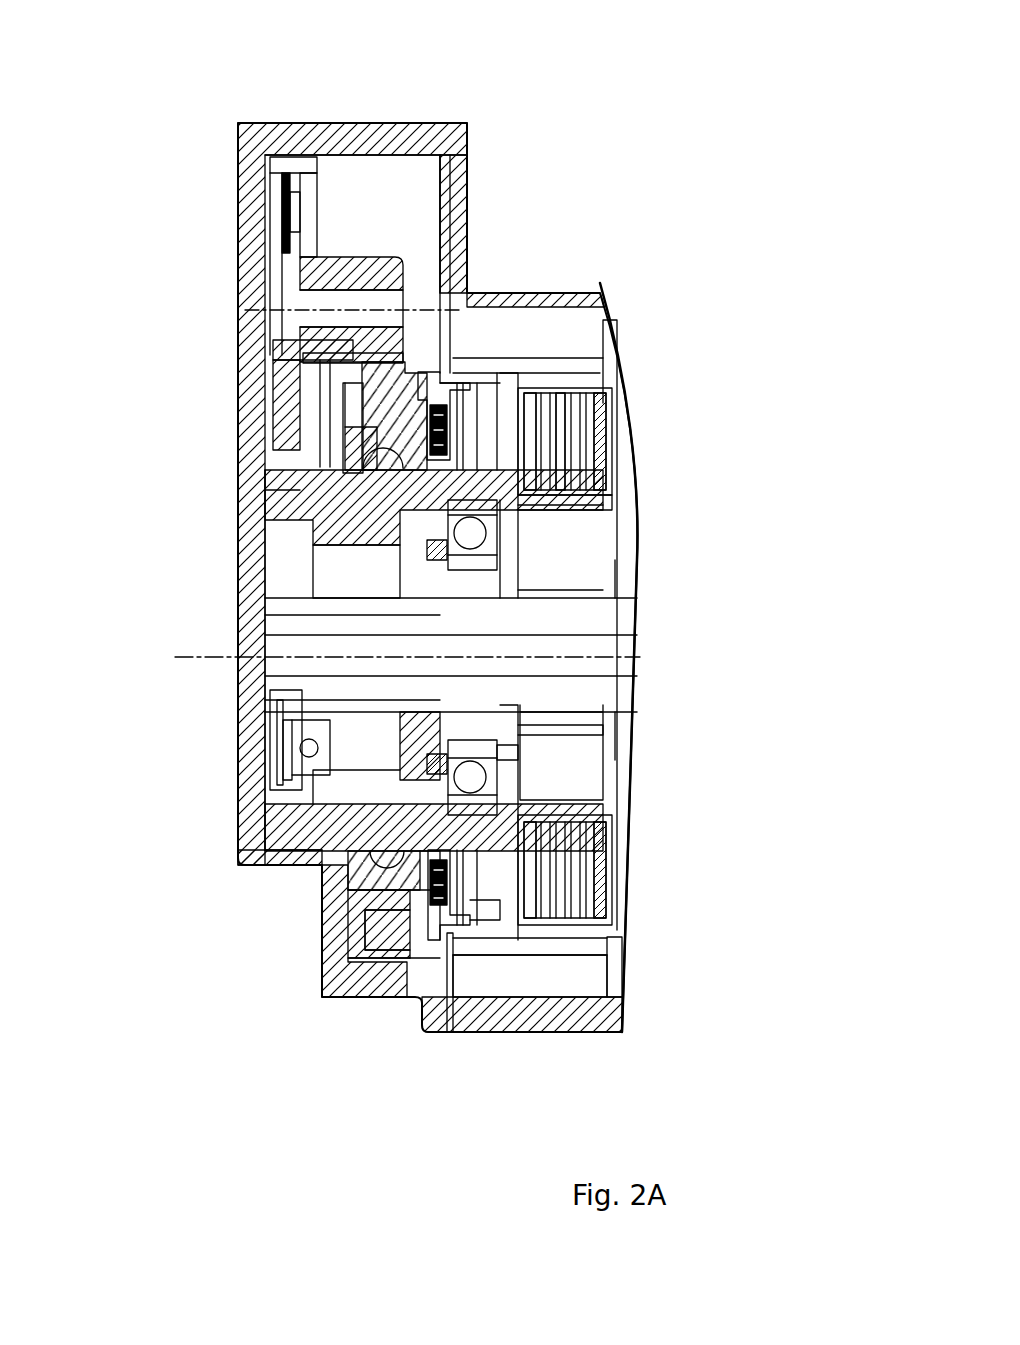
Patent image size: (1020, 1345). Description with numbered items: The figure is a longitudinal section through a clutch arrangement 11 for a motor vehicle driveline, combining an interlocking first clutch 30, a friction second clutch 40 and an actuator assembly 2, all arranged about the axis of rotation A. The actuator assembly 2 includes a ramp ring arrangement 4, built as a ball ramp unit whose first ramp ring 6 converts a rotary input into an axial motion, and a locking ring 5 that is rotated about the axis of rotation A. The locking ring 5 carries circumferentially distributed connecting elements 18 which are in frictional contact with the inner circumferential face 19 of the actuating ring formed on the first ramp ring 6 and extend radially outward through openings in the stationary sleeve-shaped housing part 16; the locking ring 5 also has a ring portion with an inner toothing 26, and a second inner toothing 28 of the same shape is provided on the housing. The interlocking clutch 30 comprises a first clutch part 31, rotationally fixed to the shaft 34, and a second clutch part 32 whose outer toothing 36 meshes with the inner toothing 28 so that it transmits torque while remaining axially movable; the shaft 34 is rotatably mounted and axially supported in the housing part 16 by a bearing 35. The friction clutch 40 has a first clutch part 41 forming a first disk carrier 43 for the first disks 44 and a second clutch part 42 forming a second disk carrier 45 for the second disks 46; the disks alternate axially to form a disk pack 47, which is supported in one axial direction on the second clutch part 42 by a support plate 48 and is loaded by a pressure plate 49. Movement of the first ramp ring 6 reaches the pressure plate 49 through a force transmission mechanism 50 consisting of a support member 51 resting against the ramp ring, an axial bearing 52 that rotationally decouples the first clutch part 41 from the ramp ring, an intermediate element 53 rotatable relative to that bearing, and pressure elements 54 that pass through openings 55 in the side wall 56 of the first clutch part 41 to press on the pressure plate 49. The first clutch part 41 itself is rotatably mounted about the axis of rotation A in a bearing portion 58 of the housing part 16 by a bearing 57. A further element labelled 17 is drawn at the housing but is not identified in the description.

The actuator assembly 2 is at (375, 173).
The ramp ring arrangement 4 is at (412, 373).
The locking ring 5 is at (525, 785).
The first ramp ring 6 is at (478, 365).
The clutch arrangement 11 is at (532, 90).
The sleeve-shaped housing part 16 is at (262, 805).
The housing 17 is at (232, 160).
The connecting elements 18 is at (410, 960).
The inner circumferential face 19 is at (540, 830).
The inner toothing 26 is at (560, 735).
The second inner toothing 28 is at (300, 745).
The first clutch 30 is at (320, 867).
The first clutch part 31 is at (412, 728).
The second clutch part 32 is at (605, 557).
The shaft 34 is at (608, 697).
The bearing 35 is at (300, 752).
The outer toothing 36 is at (267, 520).
The second clutch 40 is at (570, 345).
The first clutch part 41 is at (578, 957).
The second clutch part 42 is at (628, 522).
The first disk carrier 43 is at (600, 925).
The first disks 44 is at (530, 976).
The second disk carrier 45 is at (578, 500).
The second disks 46 is at (560, 480).
The disk pack 47 is at (586, 390).
The support plate 48 is at (600, 420).
The pressure plate 49 is at (520, 930).
The force transmission mechanism 50 is at (466, 376).
The support member 51 is at (440, 940).
The axial bearing 52 is at (460, 960).
The intermediate element 53 is at (480, 920).
The pressure elements 54 is at (497, 950).
The openings 55 is at (560, 890).
The side wall 56 is at (540, 855).
The bearing 57 is at (500, 752).
The bearing portion 58 is at (580, 470).
The axis of rotation A is at (178, 657).